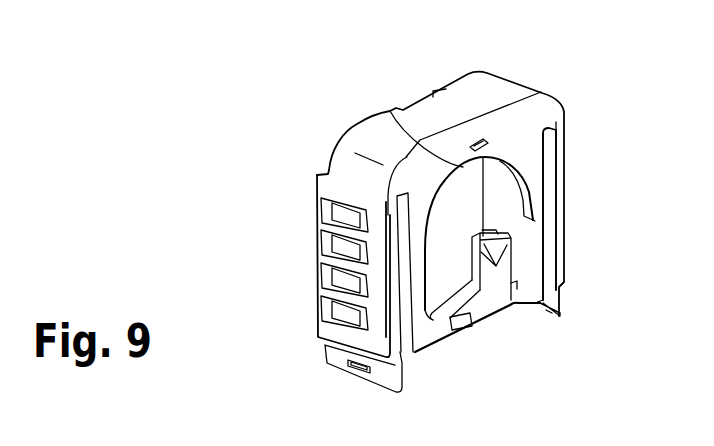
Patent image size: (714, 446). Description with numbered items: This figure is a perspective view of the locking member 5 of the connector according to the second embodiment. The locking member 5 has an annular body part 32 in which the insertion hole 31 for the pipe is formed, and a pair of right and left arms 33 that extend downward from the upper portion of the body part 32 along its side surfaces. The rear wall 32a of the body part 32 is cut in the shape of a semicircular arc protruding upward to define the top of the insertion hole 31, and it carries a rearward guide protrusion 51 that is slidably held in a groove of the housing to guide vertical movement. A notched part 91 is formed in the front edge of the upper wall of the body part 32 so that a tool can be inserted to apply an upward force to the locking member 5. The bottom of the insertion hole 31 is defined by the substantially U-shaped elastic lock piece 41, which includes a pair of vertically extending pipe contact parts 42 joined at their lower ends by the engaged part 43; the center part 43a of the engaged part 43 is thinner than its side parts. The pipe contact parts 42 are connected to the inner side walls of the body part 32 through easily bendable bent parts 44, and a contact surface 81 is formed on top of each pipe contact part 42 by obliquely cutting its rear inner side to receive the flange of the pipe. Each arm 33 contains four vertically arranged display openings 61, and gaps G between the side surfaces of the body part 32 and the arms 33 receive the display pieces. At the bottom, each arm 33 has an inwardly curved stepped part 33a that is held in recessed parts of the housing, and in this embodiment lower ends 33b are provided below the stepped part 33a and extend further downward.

The locking member 5 is at (363, 67).
The insertion hole 31 is at (390, 111).
The body part 32 is at (508, 74).
The rear wall 32a is at (543, 113).
The arms 33 is at (303, 202).
The stepped part 33a is at (324, 357).
The lower ends 33b is at (378, 388).
The elastic lock piece 41 is at (509, 337).
The pipe contact parts 42 is at (438, 326).
The engaged part 43 is at (482, 335).
The center part 43a is at (461, 337).
The bent parts 44 is at (477, 235).
The guide protrusion 51 is at (482, 139).
The display openings 61 is at (335, 228).
The contact surface 81 is at (497, 250).
The notched part 91 is at (427, 101).
The gaps G is at (411, 266).